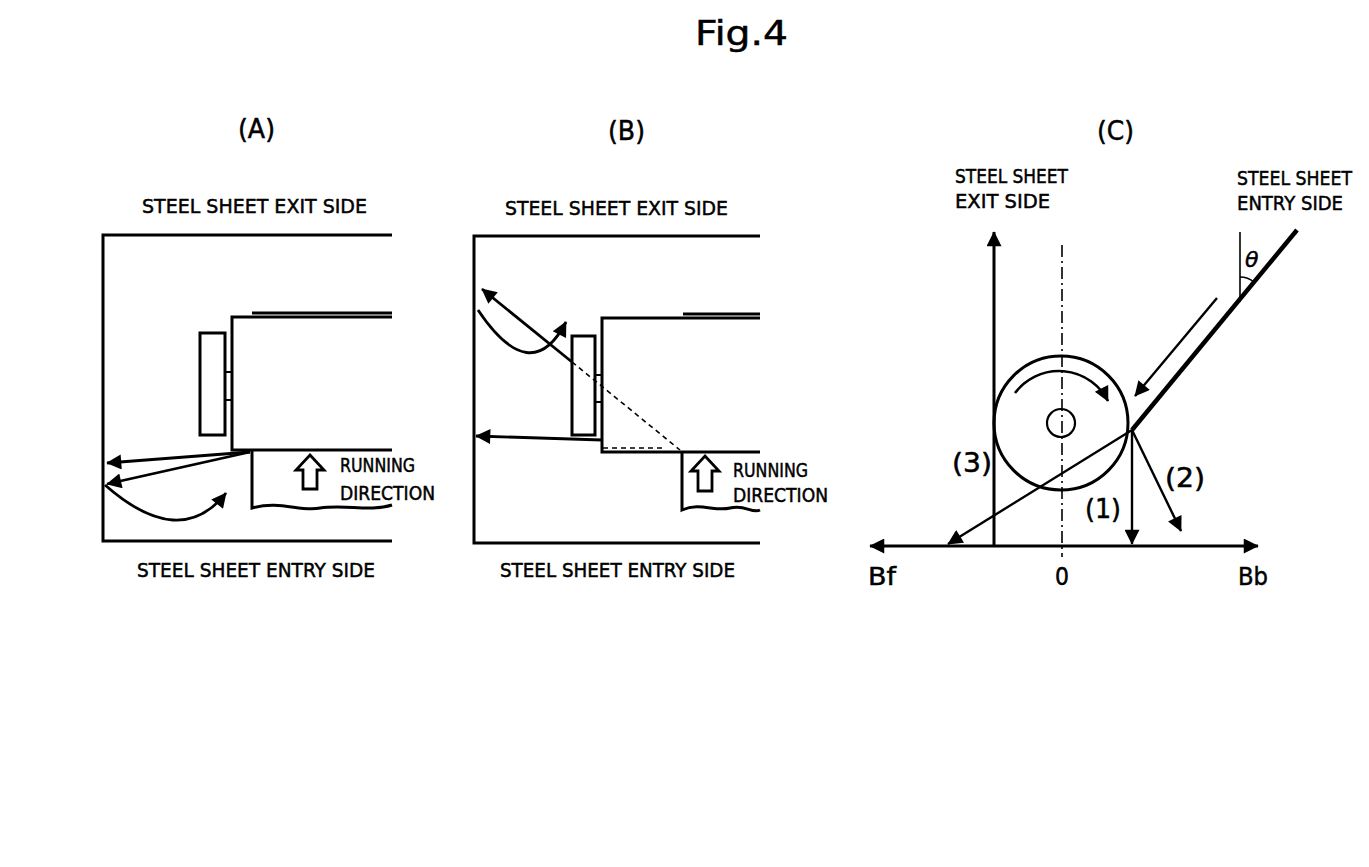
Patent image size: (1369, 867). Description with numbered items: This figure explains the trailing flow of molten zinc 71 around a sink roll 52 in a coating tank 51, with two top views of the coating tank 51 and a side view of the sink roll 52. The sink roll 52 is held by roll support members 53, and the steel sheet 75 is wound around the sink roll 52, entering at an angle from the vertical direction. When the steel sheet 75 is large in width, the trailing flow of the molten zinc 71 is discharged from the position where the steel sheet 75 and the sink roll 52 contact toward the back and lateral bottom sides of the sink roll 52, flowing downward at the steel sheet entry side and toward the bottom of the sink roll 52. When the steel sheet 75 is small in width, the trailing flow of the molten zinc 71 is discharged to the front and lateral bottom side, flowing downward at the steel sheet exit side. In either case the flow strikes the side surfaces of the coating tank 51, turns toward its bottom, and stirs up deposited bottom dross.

The coating tank 51 is at (104, 383).
The sink roll 52 is at (238, 326).
The roll support member 53 is at (200, 368).
The molten zinc 71 is at (169, 428).
The steel sheet 75 is at (310, 313).